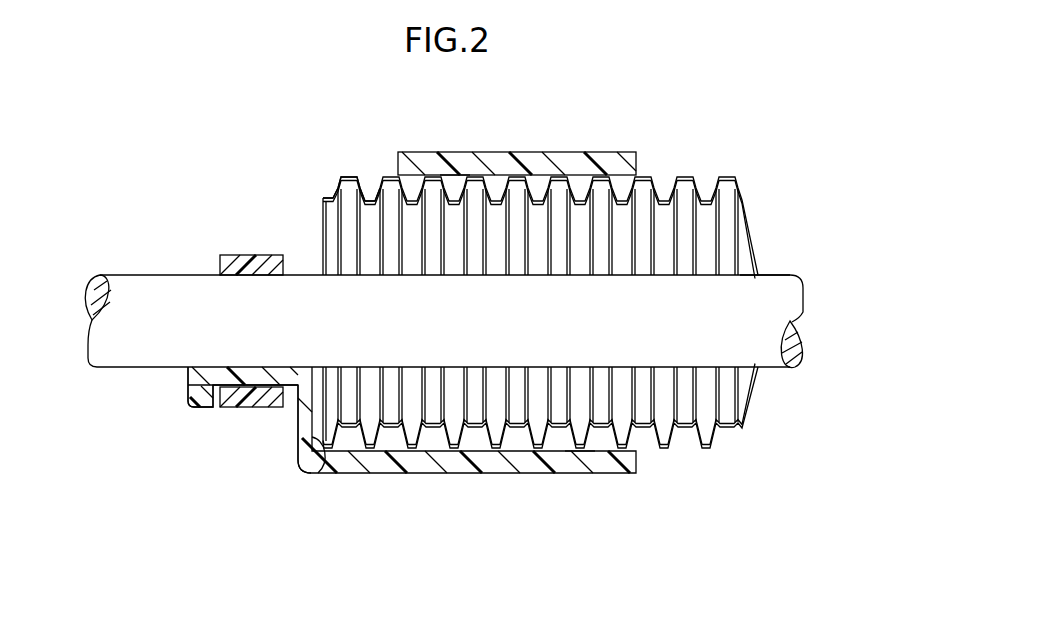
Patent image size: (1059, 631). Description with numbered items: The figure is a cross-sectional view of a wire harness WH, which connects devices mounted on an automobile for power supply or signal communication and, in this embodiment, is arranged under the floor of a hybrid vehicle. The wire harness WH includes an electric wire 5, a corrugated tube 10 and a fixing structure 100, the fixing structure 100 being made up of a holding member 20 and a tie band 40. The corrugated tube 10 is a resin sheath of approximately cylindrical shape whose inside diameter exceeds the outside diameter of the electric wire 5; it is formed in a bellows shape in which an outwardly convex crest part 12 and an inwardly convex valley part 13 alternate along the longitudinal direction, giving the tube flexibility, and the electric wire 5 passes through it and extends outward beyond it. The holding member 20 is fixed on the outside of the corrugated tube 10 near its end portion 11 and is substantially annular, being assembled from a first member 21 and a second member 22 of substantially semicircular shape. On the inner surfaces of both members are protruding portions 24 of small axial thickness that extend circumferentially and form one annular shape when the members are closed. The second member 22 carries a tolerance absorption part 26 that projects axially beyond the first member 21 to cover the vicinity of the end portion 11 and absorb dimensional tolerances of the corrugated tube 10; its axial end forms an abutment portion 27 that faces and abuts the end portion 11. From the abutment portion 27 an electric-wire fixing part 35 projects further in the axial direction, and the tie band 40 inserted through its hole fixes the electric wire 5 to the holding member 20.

The electric wire 5 is at (156, 283).
The corrugated tube 10 is at (684, 178).
The end portion 11 is at (318, 205).
The crest part 12 is at (350, 177).
The valley part 13 is at (374, 190).
The holding member 20 is at (517, 126).
The first member 21 is at (530, 152).
The second member 22 is at (412, 452).
The protruding portion 24 is at (455, 183).
The tolerance absorption part 26 is at (368, 456).
The abutment portion 27 is at (322, 476).
The electric-wire fixing part 35 is at (196, 412).
The tie band 40 is at (252, 255).
The fixing structure 100 is at (260, 476).
The wire harness WH is at (763, 135).